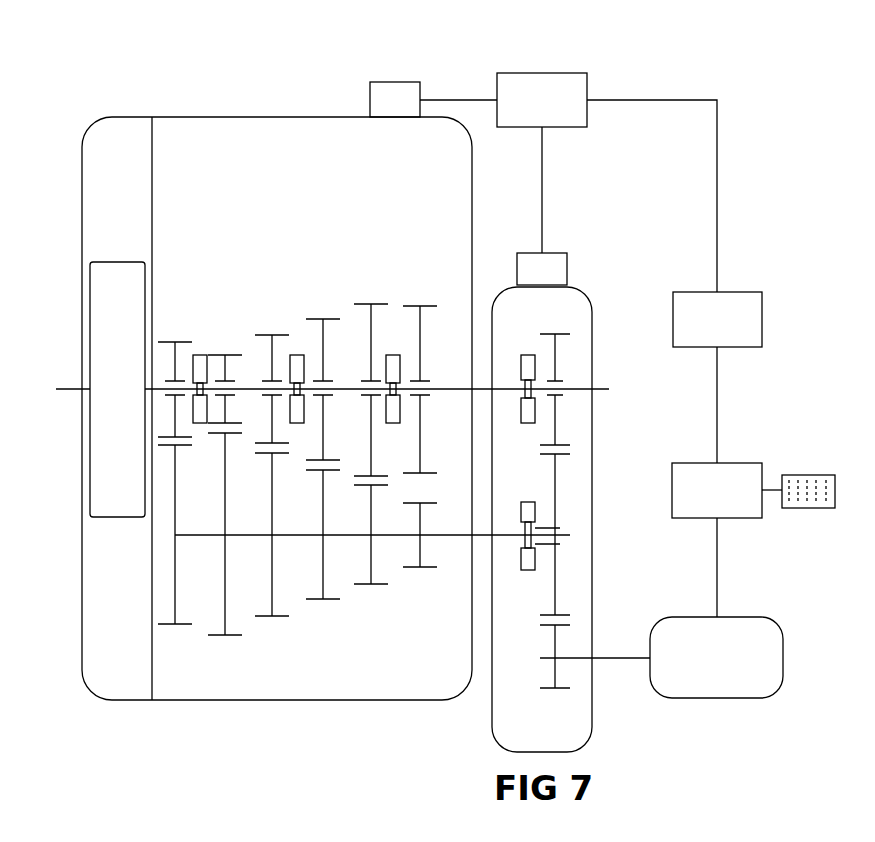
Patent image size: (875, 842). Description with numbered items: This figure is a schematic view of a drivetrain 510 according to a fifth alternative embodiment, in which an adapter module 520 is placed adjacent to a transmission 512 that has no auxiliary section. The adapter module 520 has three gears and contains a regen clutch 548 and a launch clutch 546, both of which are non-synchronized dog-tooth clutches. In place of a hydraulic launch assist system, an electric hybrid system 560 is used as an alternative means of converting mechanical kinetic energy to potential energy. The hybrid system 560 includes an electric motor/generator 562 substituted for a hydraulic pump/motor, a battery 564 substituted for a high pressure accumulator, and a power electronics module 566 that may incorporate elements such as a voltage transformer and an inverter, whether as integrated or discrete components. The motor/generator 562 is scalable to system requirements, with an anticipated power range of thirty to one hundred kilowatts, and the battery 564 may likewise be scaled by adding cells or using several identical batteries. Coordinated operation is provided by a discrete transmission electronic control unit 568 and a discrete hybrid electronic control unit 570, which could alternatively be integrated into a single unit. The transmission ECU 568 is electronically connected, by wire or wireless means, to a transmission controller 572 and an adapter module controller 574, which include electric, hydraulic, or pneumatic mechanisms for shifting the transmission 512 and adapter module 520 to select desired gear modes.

The drivetrain 510 is at (690, 72).
The transmission 512 is at (316, 94).
The adapter module 520 is at (588, 300).
The launch clutch 546 is at (527, 571).
The regen clutch 548 is at (528, 355).
The electric hybrid system 560 is at (762, 265).
The electric motor/generator 562 is at (704, 666).
The battery 564 is at (803, 475).
The power electronics module 566 is at (704, 499).
The transmission electronic control unit 568 is at (529, 108).
The hybrid electronic control unit 570 is at (704, 328).
The transmission controller 572 is at (383, 108).
The adapter module controller 574 is at (530, 278).